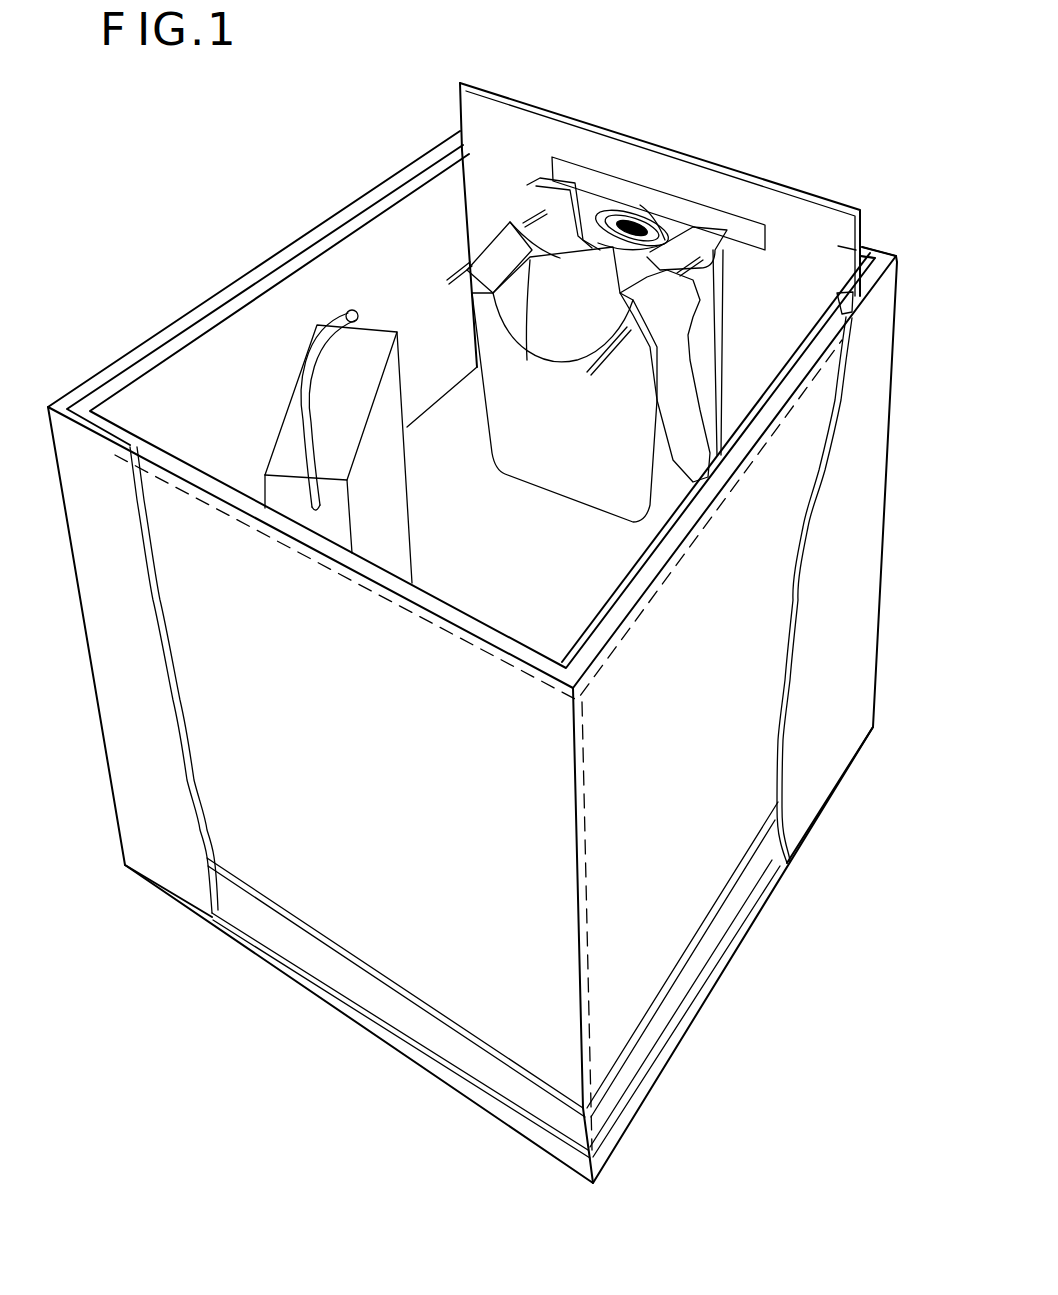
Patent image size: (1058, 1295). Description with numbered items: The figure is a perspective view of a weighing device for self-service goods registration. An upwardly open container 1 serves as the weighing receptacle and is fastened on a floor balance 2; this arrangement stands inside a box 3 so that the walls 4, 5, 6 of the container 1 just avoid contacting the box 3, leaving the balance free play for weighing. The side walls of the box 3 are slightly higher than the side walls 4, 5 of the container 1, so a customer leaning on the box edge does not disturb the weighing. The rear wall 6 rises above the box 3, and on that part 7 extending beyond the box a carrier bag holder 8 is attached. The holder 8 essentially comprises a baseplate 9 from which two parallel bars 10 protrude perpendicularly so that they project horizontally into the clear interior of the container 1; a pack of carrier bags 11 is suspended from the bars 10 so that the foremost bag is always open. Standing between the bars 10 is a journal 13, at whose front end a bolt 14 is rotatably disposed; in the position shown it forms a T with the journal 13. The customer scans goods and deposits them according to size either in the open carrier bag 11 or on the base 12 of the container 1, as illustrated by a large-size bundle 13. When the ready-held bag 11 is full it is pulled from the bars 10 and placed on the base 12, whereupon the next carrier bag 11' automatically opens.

The container 1 is at (310, 900).
The floor balance 2 is at (407, 1020).
The box 3 is at (95, 597).
The side wall 4 is at (353, 753).
The side wall 5 is at (692, 703).
The rear wall 6 is at (792, 170).
The part of the rear wall 7 is at (838, 246).
The carrier bag holder 8 is at (693, 192).
The baseplate 9 is at (590, 178).
The bars 10 is at (447, 280).
The carrier bag 11 is at (562, 372).
The next carrier bag 11' is at (706, 354).
The base 12 is at (560, 621).
The large-size bundle / journal 13 is at (317, 342).
The bolt 14 is at (612, 222).